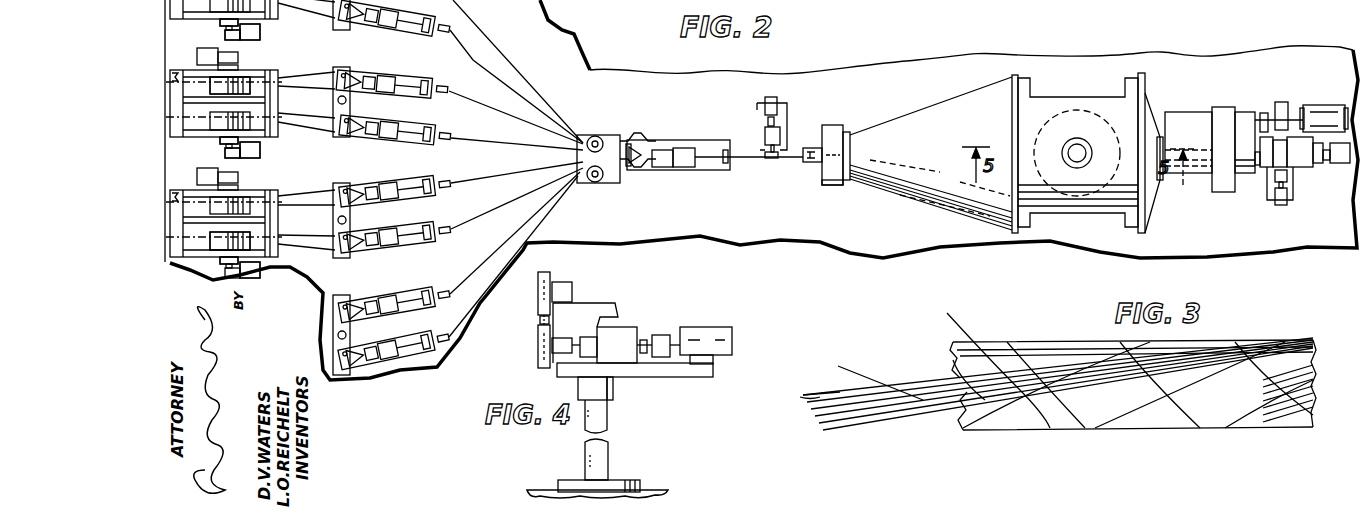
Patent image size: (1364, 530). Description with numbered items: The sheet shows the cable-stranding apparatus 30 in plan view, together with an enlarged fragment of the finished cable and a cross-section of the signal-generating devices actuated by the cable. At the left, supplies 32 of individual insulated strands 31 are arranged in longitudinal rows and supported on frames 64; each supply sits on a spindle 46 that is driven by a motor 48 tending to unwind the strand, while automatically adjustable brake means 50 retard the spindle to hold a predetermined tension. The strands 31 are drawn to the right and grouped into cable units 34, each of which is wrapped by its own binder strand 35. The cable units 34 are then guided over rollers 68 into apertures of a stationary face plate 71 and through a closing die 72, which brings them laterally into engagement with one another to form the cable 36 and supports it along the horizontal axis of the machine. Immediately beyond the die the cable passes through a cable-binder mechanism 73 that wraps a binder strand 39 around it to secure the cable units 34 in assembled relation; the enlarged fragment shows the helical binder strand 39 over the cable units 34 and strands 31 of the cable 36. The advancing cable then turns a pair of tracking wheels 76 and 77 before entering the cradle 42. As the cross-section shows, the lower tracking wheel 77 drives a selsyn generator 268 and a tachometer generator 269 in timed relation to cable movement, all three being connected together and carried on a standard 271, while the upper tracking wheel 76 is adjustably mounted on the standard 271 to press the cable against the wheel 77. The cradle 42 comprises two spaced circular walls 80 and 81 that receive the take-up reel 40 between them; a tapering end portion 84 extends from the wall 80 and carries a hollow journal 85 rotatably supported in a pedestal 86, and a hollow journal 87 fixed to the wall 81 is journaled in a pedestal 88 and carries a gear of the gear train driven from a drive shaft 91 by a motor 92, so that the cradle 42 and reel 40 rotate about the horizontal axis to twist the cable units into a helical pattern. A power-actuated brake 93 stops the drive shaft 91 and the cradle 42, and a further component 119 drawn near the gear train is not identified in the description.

In FIG. 2, the cable-stranding apparatus 30 is at (850, 79).
In FIG. 2, the strands 31 is at (320, 84).
In FIG. 3, the strands 31 is at (837, 427).
In FIG. 2, the supplies 32 is at (250, 75).
In FIG. 2, the cable units 34 is at (522, 97).
In FIG. 3, the cable units 34 is at (1052, 354).
In FIG. 3, the binder strands 35 is at (847, 370).
In FIG. 4, the cable 36 is at (540, 323).
In FIG. 3, the cable 36 is at (1245, 337).
In FIG. 3, the binder strand 39 is at (990, 313).
In FIG. 2, the take-up reel 40 is at (1067, 196).
In FIG. 2, the cradle 42 is at (931, 133).
In FIG. 2, the spindles 46 is at (227, 40).
In FIG. 2, the motors 48 is at (262, 35).
In FIG. 2, the brake means 50 is at (221, 26).
In FIG. 2, the frames 64 is at (278, 190).
In FIG. 2, the rollers 68 is at (598, 136).
In FIG. 2, the stationary face plate 71 is at (637, 135).
In FIG. 2, the closing die 72 is at (643, 166).
In FIG. 2, the cable-binder mechanism 73 is at (688, 147).
In FIG. 2, the tracking wheel 76 is at (772, 159).
In FIG. 4, the tracking wheel 76 is at (546, 284).
In FIG. 4, the tracking wheel 77 is at (538, 346).
In FIG. 2, the circular wall 80 is at (1012, 75).
In FIG. 2, the circular wall 81 is at (1146, 72).
In FIG. 2, the tapering end portion 84 is at (914, 122).
In FIG. 2, the hollow journal 85 is at (848, 133).
In FIG. 2, the pedestal 86 is at (832, 187).
In FIG. 2, the hollow journal 87 is at (1200, 135).
In FIG. 2, the pedestal 88 is at (1200, 175).
In FIG. 2, the drive shaft 91 is at (1293, 118).
In FIG. 2, the motor 92 is at (1330, 103).
In FIG. 2, the power-actuated brake 93 is at (1280, 100).
In FIG. 2, the gear train 119 is at (1290, 170).
In FIG. 2, the selsyn generator 268 is at (765, 133).
In FIG. 4, the selsyn generator 268 is at (625, 330).
In FIG. 2, the tachometer generator 269 is at (765, 105).
In FIG. 4, the tachometer generator 269 is at (720, 322).
In FIG. 2, the standard 271 is at (790, 109).
In FIG. 4, the standard 271 is at (617, 387).